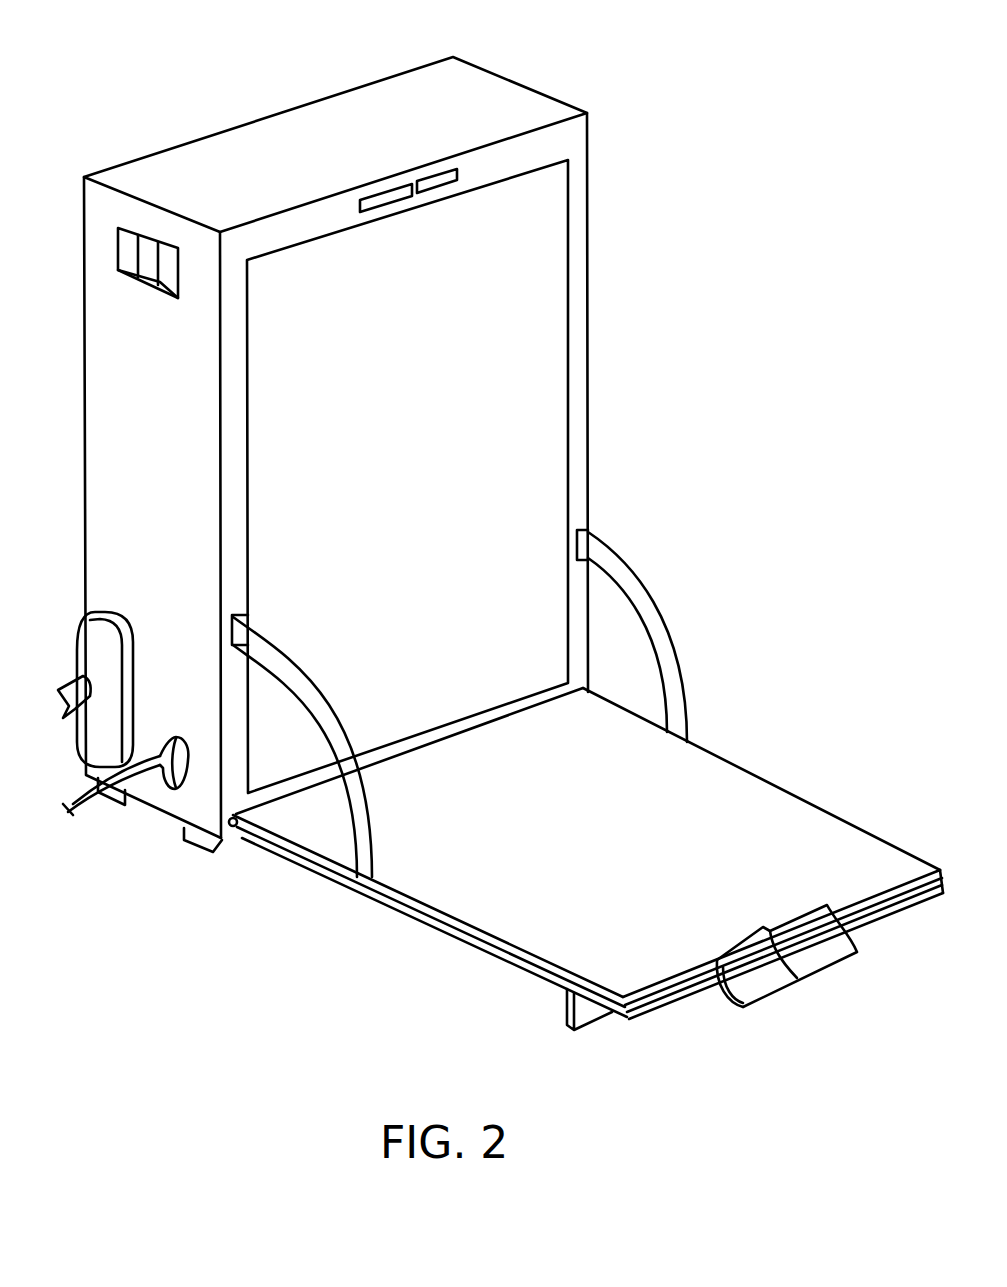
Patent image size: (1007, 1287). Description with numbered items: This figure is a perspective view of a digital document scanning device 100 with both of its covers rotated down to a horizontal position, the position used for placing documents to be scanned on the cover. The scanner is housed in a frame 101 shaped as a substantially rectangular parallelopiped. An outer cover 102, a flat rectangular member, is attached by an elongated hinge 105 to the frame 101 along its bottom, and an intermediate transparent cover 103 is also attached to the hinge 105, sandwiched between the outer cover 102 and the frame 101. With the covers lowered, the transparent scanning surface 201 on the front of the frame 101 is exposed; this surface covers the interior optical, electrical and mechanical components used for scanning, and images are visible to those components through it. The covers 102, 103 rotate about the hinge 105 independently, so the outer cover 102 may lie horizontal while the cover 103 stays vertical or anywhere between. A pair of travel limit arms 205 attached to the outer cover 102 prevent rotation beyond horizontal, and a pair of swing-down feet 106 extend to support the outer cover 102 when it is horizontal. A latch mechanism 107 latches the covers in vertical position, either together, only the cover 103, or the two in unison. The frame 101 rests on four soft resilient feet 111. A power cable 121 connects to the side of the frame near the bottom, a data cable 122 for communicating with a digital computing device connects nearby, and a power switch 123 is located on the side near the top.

The digital document scanning device 100 is at (214, 104).
The frame 101 is at (530, 90).
The outer cover 102 is at (497, 955).
The intermediate transparent cover 103 is at (823, 813).
The elongated hinge 105 is at (232, 828).
The swing-down feet 106 is at (590, 1030).
The latch mechanism 107 is at (812, 977).
The feet 111 is at (183, 828).
The power cable 121 is at (92, 808).
The data cable 122 is at (68, 688).
The power switch 123 is at (138, 283).
The transparent scanning surface 201 is at (481, 266).
The travel limit arms 205 is at (372, 795).